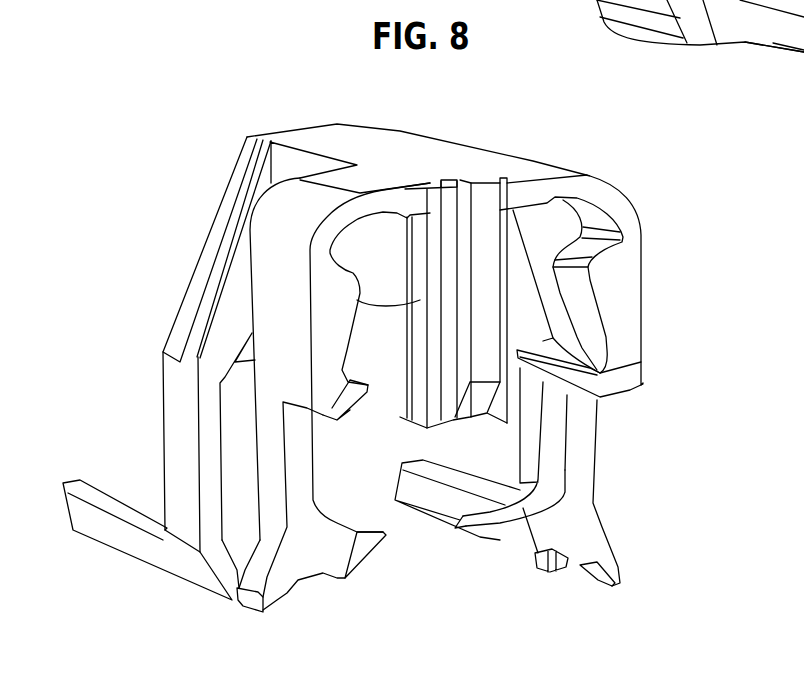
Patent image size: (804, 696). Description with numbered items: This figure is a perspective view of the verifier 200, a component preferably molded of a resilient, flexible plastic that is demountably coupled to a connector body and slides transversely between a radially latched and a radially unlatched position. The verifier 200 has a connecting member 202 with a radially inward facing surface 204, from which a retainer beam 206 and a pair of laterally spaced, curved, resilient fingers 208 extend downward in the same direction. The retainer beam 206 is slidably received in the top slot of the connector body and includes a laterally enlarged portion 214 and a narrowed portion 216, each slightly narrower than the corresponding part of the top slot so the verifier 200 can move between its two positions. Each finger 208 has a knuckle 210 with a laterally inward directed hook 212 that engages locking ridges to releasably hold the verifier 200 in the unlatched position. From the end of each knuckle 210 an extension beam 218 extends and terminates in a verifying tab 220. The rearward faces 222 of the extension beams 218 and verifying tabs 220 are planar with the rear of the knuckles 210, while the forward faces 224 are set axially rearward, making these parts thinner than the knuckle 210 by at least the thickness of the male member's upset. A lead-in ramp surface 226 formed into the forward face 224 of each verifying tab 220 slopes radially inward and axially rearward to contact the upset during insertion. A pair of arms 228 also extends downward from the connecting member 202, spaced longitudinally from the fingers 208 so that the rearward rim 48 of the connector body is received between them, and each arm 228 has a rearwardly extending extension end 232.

The verifier 200 is at (632, 171).
The connecting member 202 is at (373, 131).
The radially inward facing surface 204 is at (360, 225).
The retainer beam 206 is at (443, 237).
The fingers 208 is at (293, 320).
The knuckle 210 is at (360, 417).
The hook 212 is at (323, 392).
The laterally enlarged portion 214 is at (357, 300).
The narrowed portion 216 is at (483, 283).
The extension beam 218 is at (577, 493).
The verifying tab 220 is at (555, 538).
The rearward faces 222 is at (260, 473).
The forward faces 224 is at (617, 355).
The lead-in ramp surface 226 is at (352, 548).
The arms 228 is at (533, 422).
The extension end 232 is at (781, 0).
The rearward rim 48 is at (653, 3).